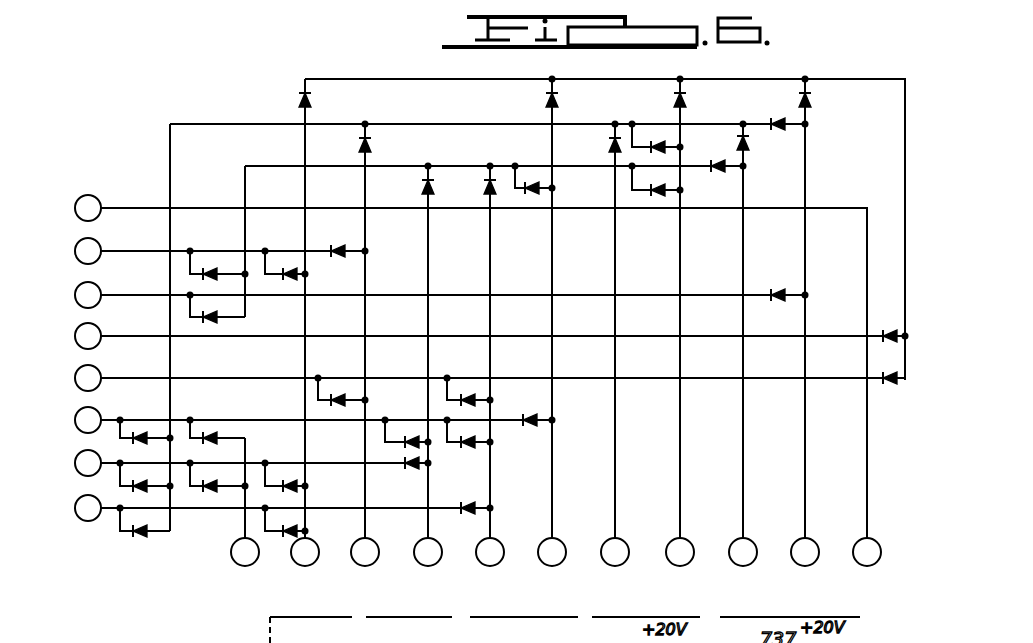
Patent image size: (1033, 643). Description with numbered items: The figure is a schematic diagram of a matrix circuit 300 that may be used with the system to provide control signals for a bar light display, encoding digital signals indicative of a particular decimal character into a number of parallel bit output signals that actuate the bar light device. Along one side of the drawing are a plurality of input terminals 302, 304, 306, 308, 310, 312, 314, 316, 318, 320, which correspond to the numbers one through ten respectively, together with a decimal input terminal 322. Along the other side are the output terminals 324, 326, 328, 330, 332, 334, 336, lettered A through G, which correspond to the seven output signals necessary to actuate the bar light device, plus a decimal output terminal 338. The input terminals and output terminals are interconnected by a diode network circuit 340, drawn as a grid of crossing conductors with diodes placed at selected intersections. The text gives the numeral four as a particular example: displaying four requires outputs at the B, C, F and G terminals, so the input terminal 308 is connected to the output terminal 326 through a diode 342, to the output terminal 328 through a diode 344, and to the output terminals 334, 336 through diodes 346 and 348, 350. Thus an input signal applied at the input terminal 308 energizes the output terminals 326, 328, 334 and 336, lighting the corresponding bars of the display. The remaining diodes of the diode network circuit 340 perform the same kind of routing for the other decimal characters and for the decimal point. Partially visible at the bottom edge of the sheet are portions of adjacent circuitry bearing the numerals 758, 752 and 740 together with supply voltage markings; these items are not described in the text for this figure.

The matrix circuit 300 is at (545, 264).
The input terminal 302 is at (232, 557).
The input terminal 304 is at (314, 562).
The input terminal 306 is at (374, 562).
The input terminal 308 is at (437, 562).
The input terminal 310 is at (499, 562).
The input terminal 312 is at (561, 562).
The input terminal 314 is at (624, 562).
The input terminal 316 is at (689, 562).
The input terminal 318 is at (752, 562).
The input terminal 320 is at (814, 562).
The decimal input terminal 322 is at (876, 562).
The output terminal 324 is at (83, 502).
The output terminal 326 is at (83, 458).
The output terminal 328 is at (83, 414).
The output terminal 330 is at (83, 372).
The output terminal 332 is at (83, 330).
The output terminal 334 is at (83, 287).
The output terminal 336 is at (84, 242).
The decimal output terminal 338 is at (98, 168).
The diode network circuit 340 is at (203, 533).
The diode 342 is at (417, 468).
The diode 344 is at (412, 435).
The diode 346 is at (437, 185).
The diode 348 is at (218, 322).
The diode 350 is at (210, 268).
The driver block 758 is at (409, 630).
The driver block 752 is at (490, 630).
The driver block 740 is at (568, 630).